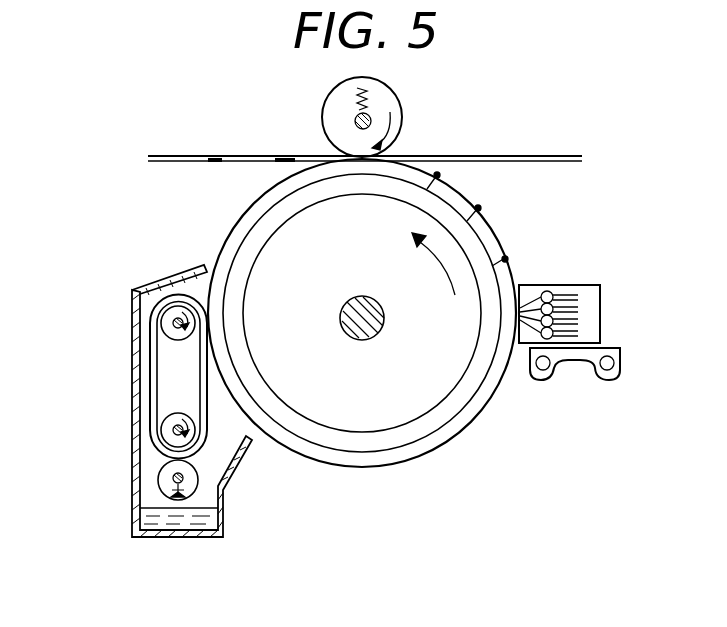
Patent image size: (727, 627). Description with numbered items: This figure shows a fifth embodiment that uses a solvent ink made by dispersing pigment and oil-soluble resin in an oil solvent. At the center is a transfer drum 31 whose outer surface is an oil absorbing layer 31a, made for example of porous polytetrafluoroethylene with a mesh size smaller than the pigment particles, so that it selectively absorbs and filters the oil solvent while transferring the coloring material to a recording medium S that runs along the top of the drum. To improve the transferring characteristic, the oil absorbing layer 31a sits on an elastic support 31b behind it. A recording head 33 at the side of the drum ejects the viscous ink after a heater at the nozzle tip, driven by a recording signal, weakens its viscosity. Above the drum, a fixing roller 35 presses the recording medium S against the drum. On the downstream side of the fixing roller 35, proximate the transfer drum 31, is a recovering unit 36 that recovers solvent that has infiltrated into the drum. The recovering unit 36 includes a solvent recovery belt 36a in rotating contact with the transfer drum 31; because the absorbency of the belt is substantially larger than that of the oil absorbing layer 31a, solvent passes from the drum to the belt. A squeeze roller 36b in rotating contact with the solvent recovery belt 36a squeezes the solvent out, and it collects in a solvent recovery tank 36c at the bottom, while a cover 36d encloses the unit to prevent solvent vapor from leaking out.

The recording medium S is at (513, 157).
The fixing roller 35 is at (402, 121).
The transfer drum 31 is at (403, 325).
The oil absorbing layer 31a is at (441, 443).
The elastic support 31b is at (446, 418).
The recording head 33 is at (600, 312).
The recovering unit 36 is at (160, 386).
The solvent recovery belt 36a is at (150, 365).
The squeeze roller 36b is at (166, 478).
The solvent recovery tank 36c is at (222, 515).
The cover 36d is at (150, 284).